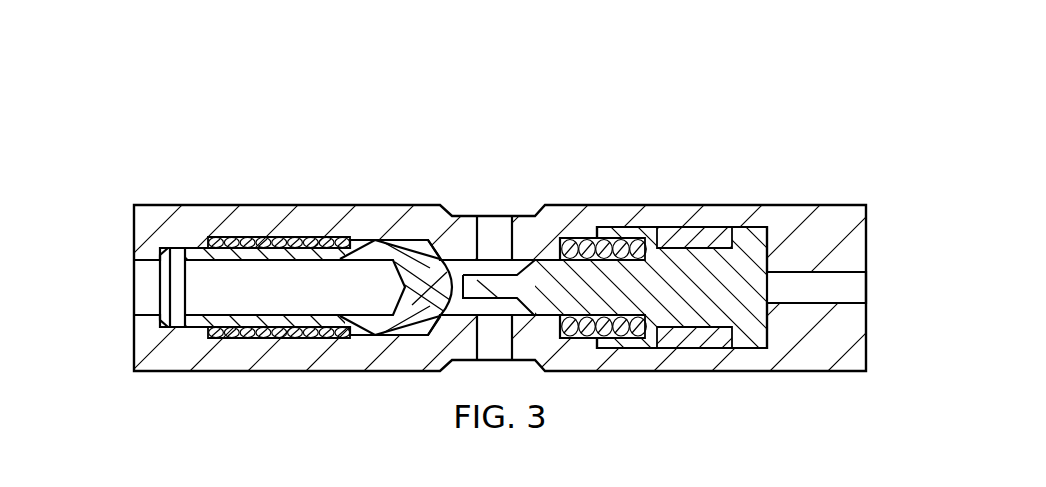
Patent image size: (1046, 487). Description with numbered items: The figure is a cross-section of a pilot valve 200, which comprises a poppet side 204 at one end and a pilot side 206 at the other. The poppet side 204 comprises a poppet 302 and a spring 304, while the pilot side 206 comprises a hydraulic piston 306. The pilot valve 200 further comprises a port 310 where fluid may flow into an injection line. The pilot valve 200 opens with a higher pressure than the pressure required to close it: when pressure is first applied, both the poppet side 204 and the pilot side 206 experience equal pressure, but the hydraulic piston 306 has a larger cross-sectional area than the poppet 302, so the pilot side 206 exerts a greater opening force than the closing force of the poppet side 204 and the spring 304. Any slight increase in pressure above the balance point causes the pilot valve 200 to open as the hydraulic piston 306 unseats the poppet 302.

The pilot valve 200 is at (379, 94).
The poppet side 204 is at (134, 288).
The pilot side 206 is at (866, 288).
The poppet 302 is at (418, 273).
The spring 304 is at (280, 237).
The hydraulic piston 306 is at (742, 255).
The port 310 is at (501, 225).